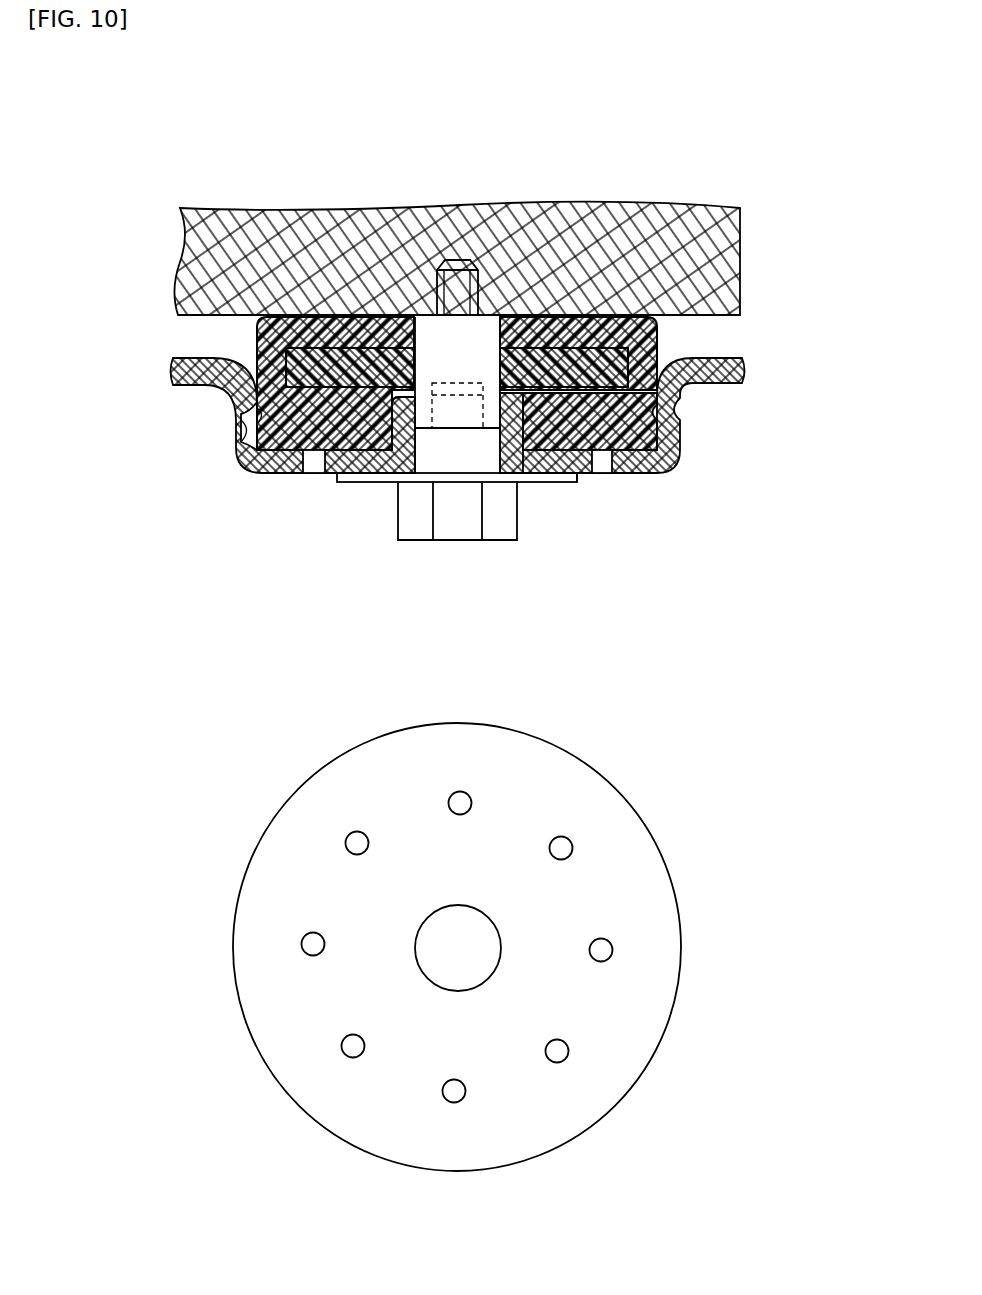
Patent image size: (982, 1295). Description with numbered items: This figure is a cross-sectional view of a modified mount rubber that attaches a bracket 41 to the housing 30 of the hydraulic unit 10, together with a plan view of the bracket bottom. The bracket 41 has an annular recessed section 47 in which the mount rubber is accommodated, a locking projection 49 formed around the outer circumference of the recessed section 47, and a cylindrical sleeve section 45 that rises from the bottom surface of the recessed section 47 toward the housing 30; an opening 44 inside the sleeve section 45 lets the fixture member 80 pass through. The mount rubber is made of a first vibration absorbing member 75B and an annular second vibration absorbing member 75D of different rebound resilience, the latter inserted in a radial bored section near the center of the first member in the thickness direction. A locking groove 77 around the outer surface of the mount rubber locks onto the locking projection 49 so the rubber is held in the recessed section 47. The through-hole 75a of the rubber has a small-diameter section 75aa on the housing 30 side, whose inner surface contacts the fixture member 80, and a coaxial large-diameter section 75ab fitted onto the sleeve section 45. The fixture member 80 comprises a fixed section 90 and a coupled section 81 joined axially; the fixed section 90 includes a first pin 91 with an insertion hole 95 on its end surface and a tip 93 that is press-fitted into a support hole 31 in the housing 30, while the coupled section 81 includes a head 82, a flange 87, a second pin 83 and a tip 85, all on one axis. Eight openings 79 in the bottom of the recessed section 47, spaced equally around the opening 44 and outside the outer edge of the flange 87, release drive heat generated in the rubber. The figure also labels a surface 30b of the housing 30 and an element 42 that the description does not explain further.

The hydraulic unit 10 is at (505, 258).
The housing 30 is at (718, 278).
The lower surface of mounting member 30b is at (672, 317).
The support hole 31 is at (438, 290).
The bracket 41 is at (737, 372).
The housing 42 is at (330, 497).
The opening 44 is at (487, 443).
The sleeve section 45 is at (518, 420).
The recessed section 47 is at (325, 442).
The locking projection 49 is at (250, 428).
The through-hole 75a is at (270, 158).
The small-diameter section 75aa is at (415, 397).
The large-diameter section 75ab is at (413, 388).
The first vibration absorbing member 75B is at (263, 345).
The second vibration absorbing member 75D is at (342, 355).
The locking groove 77 is at (266, 414).
The openings 79 is at (310, 465).
The fixture member 80 is at (485, 538).
The coupled section 81 is at (377, 513).
The head 82 is at (415, 530).
The second pin 83 is at (457, 457).
The tip 85 is at (450, 413).
The flange 87 is at (587, 480).
The fixed section 90 is at (500, 353).
The first pin 91 is at (487, 378).
The tip 93 is at (465, 290).
The insertion hole 95 is at (460, 383).